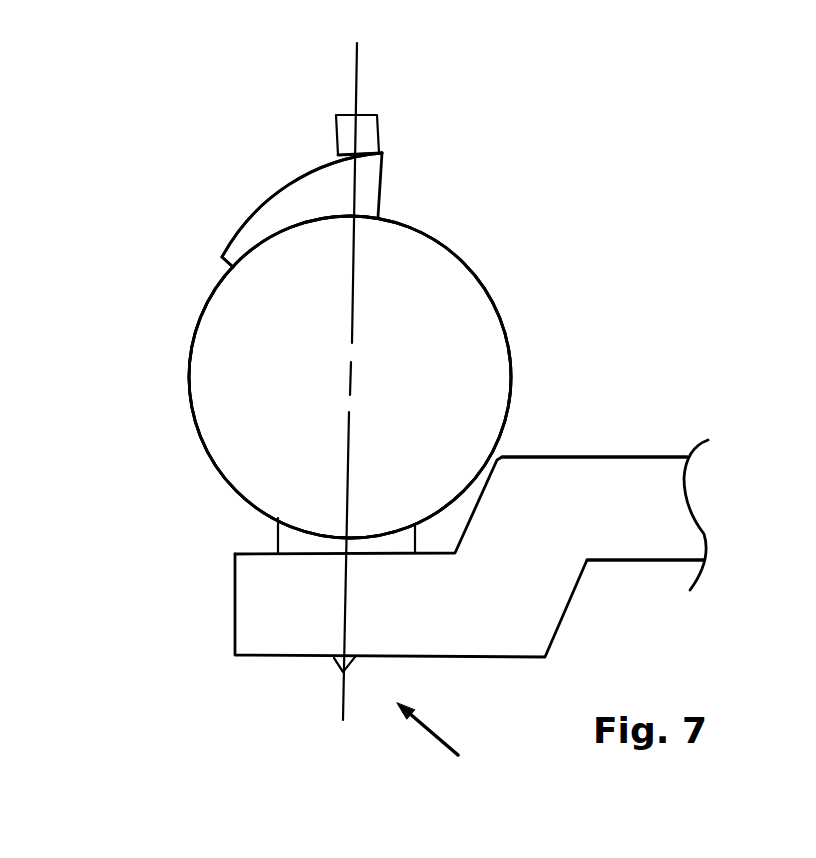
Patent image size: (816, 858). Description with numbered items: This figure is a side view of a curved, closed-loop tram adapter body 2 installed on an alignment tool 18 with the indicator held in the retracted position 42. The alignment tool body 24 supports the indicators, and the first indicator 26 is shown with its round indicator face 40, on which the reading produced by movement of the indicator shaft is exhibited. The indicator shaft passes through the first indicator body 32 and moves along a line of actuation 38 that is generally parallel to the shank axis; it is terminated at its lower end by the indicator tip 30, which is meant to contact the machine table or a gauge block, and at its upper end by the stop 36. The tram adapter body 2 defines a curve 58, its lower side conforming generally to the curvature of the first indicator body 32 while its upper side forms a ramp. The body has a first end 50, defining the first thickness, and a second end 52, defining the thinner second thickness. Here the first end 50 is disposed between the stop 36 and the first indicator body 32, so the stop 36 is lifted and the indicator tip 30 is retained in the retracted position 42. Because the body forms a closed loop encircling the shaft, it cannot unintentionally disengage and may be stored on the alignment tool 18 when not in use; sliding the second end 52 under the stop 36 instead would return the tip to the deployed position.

The tram adapter body 2 is at (268, 200).
The alignment tool 18 is at (612, 467).
The alignment tool body 24 is at (235, 583).
The first indicator 26 is at (197, 323).
The indicator tip 30 is at (333, 668).
The first indicator body 32 is at (197, 423).
The stop 36 is at (336, 115).
The line of actuation 38 is at (342, 692).
The indicator face 40 is at (422, 300).
The retracted position 42 is at (440, 743).
The first end 50 is at (383, 165).
The second end 52 is at (222, 255).
The curve 58 is at (320, 213).